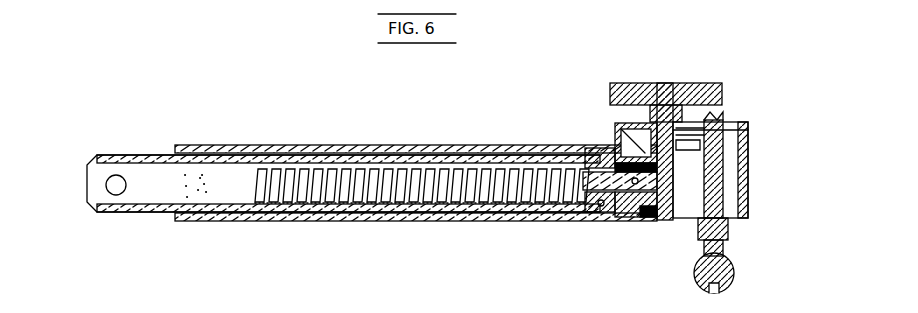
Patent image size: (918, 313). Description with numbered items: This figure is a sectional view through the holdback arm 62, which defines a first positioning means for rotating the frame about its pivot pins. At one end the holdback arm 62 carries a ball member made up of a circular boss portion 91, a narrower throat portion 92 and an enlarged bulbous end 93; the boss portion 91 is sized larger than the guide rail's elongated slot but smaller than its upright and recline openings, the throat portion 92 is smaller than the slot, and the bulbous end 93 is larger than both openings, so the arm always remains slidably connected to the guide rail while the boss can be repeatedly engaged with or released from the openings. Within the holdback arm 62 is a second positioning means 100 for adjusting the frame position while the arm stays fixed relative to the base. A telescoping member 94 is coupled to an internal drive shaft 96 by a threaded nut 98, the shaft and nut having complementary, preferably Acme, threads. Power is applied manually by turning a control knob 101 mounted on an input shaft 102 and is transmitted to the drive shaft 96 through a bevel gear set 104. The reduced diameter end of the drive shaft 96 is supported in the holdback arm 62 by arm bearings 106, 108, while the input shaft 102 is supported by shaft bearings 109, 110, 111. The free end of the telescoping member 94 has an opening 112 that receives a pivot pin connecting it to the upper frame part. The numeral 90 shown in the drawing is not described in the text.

The second positioning means 100 is at (203, 112).
The holdback arm 62 is at (365, 146).
The telescoping member 94 is at (150, 213).
The opening 112 is at (116, 196).
The drive shaft 96 is at (392, 192).
The threaded nut 98 is at (531, 219).
The arm bearing 106 is at (565, 218).
The arm bearing 108 is at (605, 214).
The shaft bearing 109 is at (653, 219).
The bevel gear set 104 is at (620, 126).
The input shaft 102 is at (670, 84).
The control knob 101 is at (676, 101).
The shaft bearing 111 is at (678, 121).
The shaft bearing 110 is at (740, 133).
The circular boss portion 91 is at (728, 229).
The throat portion 92 is at (724, 243).
The enlarged bulbous end 93 is at (731, 268).
The knob assembly 90 is at (690, 250).